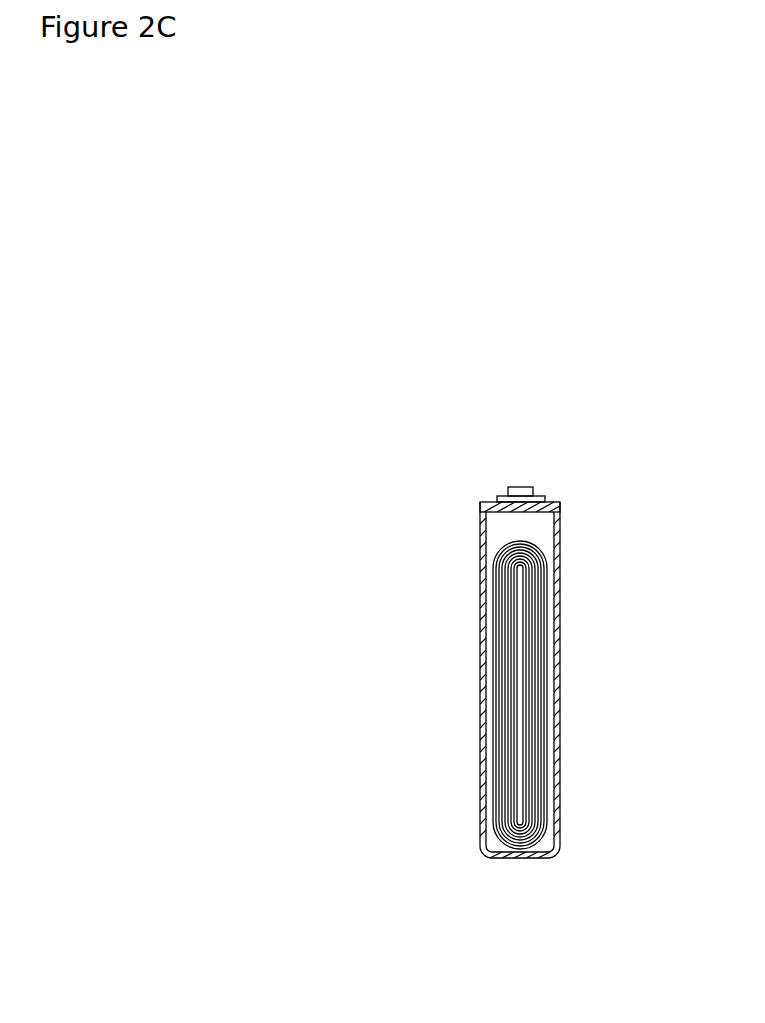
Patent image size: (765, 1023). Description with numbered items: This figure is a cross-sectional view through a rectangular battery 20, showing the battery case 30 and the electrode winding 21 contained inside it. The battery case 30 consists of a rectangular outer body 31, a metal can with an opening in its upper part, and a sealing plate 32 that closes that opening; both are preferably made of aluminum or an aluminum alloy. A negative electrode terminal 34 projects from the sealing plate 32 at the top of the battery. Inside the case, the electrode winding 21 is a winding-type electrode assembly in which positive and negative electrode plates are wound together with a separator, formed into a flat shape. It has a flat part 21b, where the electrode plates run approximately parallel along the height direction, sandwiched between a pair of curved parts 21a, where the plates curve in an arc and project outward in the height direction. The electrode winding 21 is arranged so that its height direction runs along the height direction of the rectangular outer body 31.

The rectangular battery 20 is at (563, 477).
The electrode winding 21 is at (556, 670).
The curved part 21a is at (540, 552).
The flat part 21b is at (537, 727).
The battery case 30 is at (480, 733).
The rectangular outer body 31 is at (480, 647).
The sealing plate 32 is at (491, 507).
The negative electrode terminal 34 is at (520, 487).